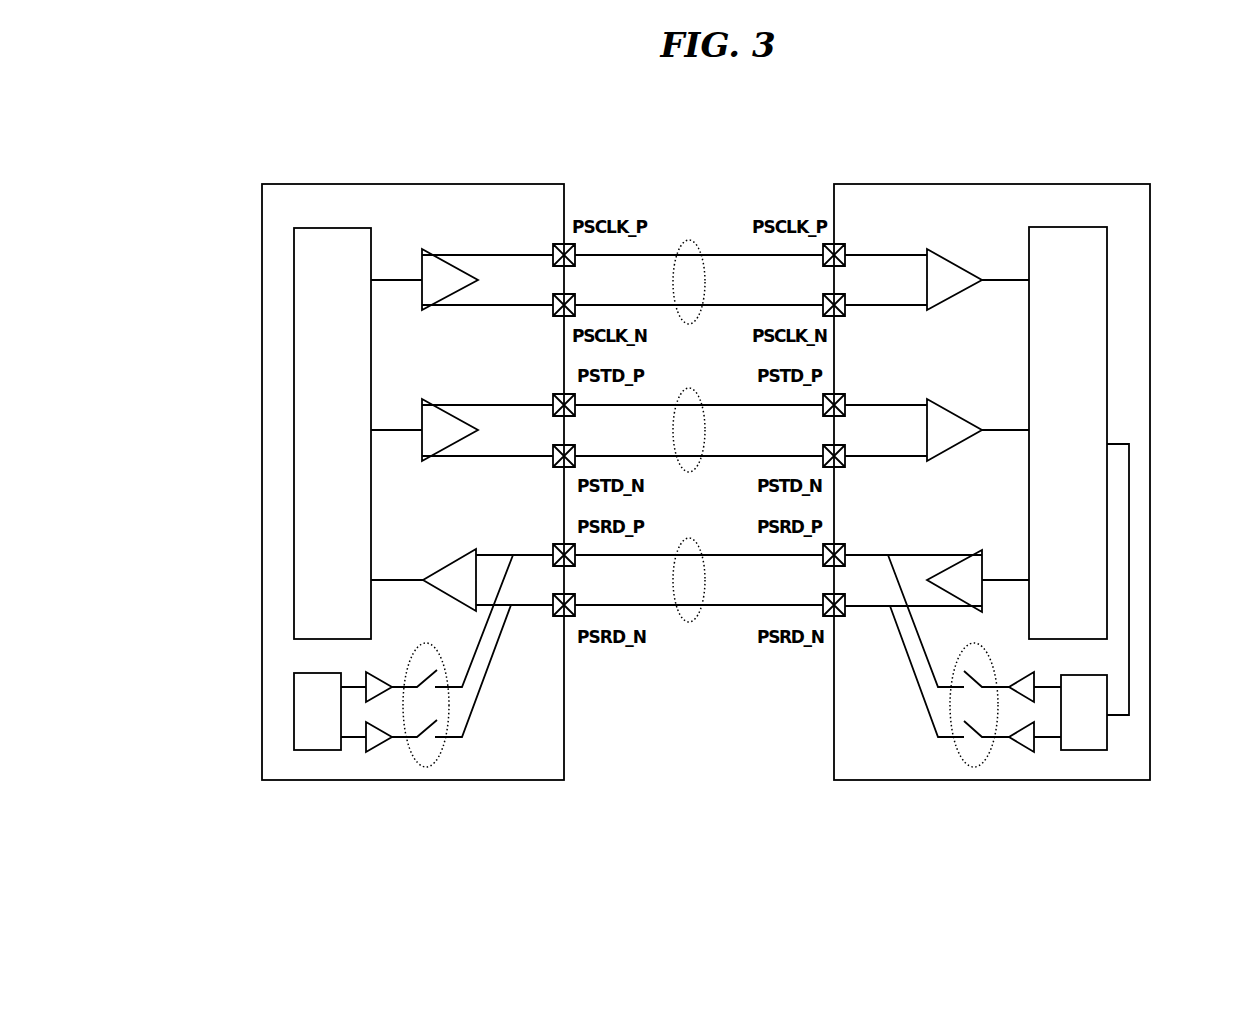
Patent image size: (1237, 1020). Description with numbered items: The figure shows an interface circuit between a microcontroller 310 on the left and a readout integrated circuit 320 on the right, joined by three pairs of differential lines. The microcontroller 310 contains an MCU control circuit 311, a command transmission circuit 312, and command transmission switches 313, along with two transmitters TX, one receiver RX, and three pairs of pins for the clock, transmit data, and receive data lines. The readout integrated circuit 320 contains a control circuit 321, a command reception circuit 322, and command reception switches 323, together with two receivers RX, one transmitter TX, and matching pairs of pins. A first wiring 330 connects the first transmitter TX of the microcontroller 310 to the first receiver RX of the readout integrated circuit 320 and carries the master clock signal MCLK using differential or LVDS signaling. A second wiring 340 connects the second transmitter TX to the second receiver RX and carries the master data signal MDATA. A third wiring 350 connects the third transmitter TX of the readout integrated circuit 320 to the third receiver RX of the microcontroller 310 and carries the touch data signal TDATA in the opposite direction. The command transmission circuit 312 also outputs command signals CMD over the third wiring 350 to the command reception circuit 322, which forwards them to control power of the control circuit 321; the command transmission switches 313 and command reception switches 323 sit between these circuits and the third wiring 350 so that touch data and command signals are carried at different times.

The microcontroller 310 is at (403, 184).
The MCU control circuit 311 is at (294, 298).
The command transmission circuit 312 is at (294, 715).
The command transmission switch 313 is at (428, 767).
The readout integrated circuit 320 is at (991, 184).
The control circuit 321 is at (1107, 303).
The command reception circuit 322 is at (1106, 742).
The command reception switch 323 is at (975, 767).
The first wiring 330 is at (690, 240).
The second wiring 340 is at (690, 388).
The third wiring 350 is at (690, 538).